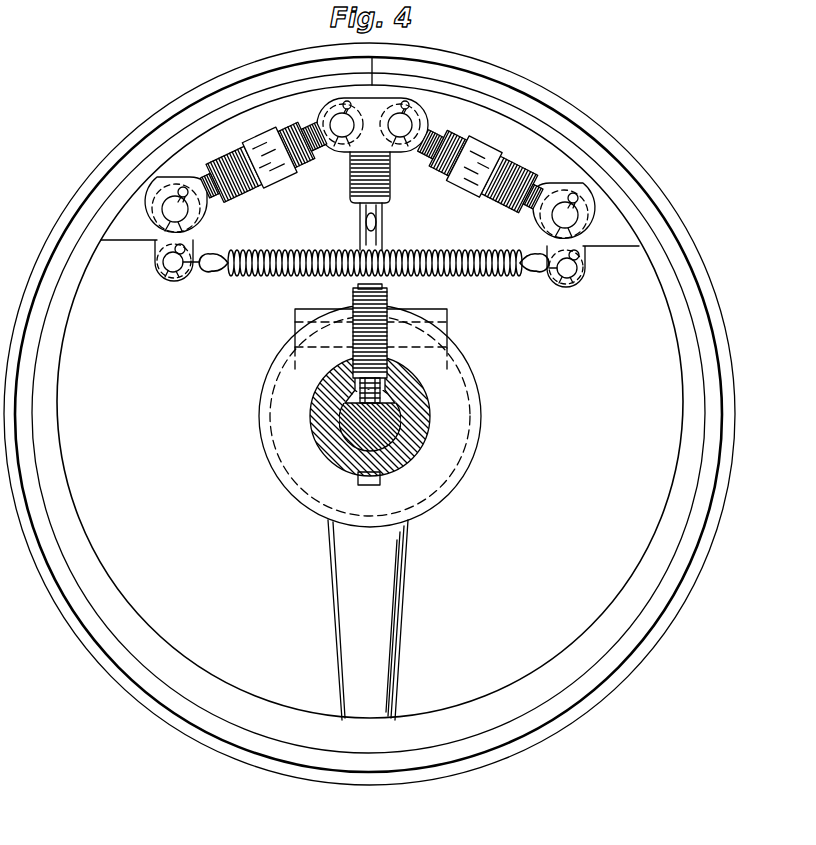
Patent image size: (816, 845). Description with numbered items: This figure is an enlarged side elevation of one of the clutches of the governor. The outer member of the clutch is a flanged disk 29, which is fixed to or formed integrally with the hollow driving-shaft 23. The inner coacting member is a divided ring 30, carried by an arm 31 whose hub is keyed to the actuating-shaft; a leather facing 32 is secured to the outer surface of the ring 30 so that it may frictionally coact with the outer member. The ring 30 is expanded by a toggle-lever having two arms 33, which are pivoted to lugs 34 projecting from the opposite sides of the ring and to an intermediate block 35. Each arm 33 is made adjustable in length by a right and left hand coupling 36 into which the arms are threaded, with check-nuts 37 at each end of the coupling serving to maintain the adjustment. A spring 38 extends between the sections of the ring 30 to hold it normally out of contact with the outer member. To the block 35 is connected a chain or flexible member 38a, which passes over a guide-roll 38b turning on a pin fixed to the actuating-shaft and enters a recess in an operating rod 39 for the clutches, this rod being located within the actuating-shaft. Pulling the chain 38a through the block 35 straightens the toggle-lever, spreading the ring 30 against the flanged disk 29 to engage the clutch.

The driving-shaft 23 is at (424, 410).
The flanged disk 29 is at (685, 597).
The divided ring 30 is at (81, 533).
The arm 31 is at (396, 655).
The leather facing 32 is at (612, 665).
The toggle-lever arms 33 is at (206, 184).
The lugs 34 is at (153, 240).
The intermediate block 35 is at (378, 152).
The right and left hand coupling 36 is at (245, 142).
The check-nuts 37 is at (226, 199).
The spring 38 is at (452, 278).
The chain or flexible member 38a is at (387, 292).
The guide-roll 38b is at (354, 300).
The operating rod 39 is at (388, 427).